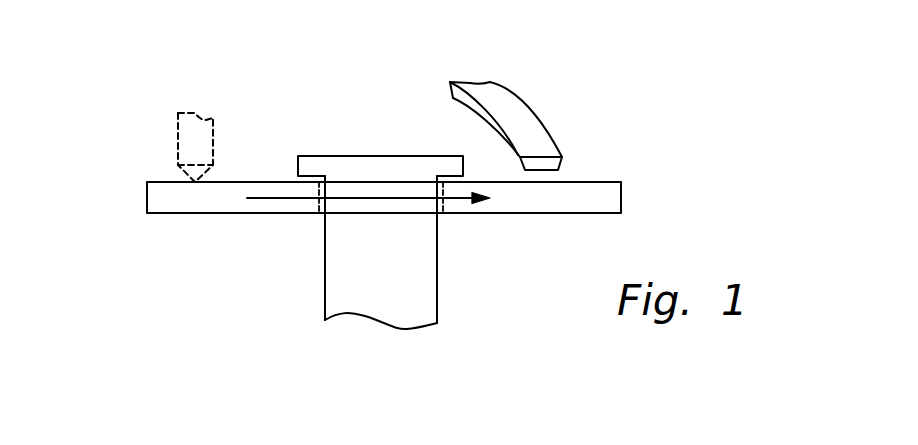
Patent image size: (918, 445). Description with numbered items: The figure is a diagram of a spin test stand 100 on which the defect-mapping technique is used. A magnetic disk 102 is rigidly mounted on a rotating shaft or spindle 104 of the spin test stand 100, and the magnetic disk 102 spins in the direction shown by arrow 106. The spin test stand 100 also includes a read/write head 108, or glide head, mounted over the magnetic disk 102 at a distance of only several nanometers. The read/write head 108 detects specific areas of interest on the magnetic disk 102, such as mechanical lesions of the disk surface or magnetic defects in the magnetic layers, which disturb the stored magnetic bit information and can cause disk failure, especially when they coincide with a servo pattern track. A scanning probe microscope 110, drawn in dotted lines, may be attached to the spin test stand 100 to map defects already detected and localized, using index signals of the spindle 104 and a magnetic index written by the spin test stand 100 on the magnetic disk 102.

The spin test stand 100 is at (622, 65).
The magnetic disk 102 is at (610, 200).
The rotating shaft 104 is at (422, 270).
The arrow 106 is at (278, 198).
The read/write head 108 is at (531, 127).
The scanning probe microscope 110 is at (191, 138).